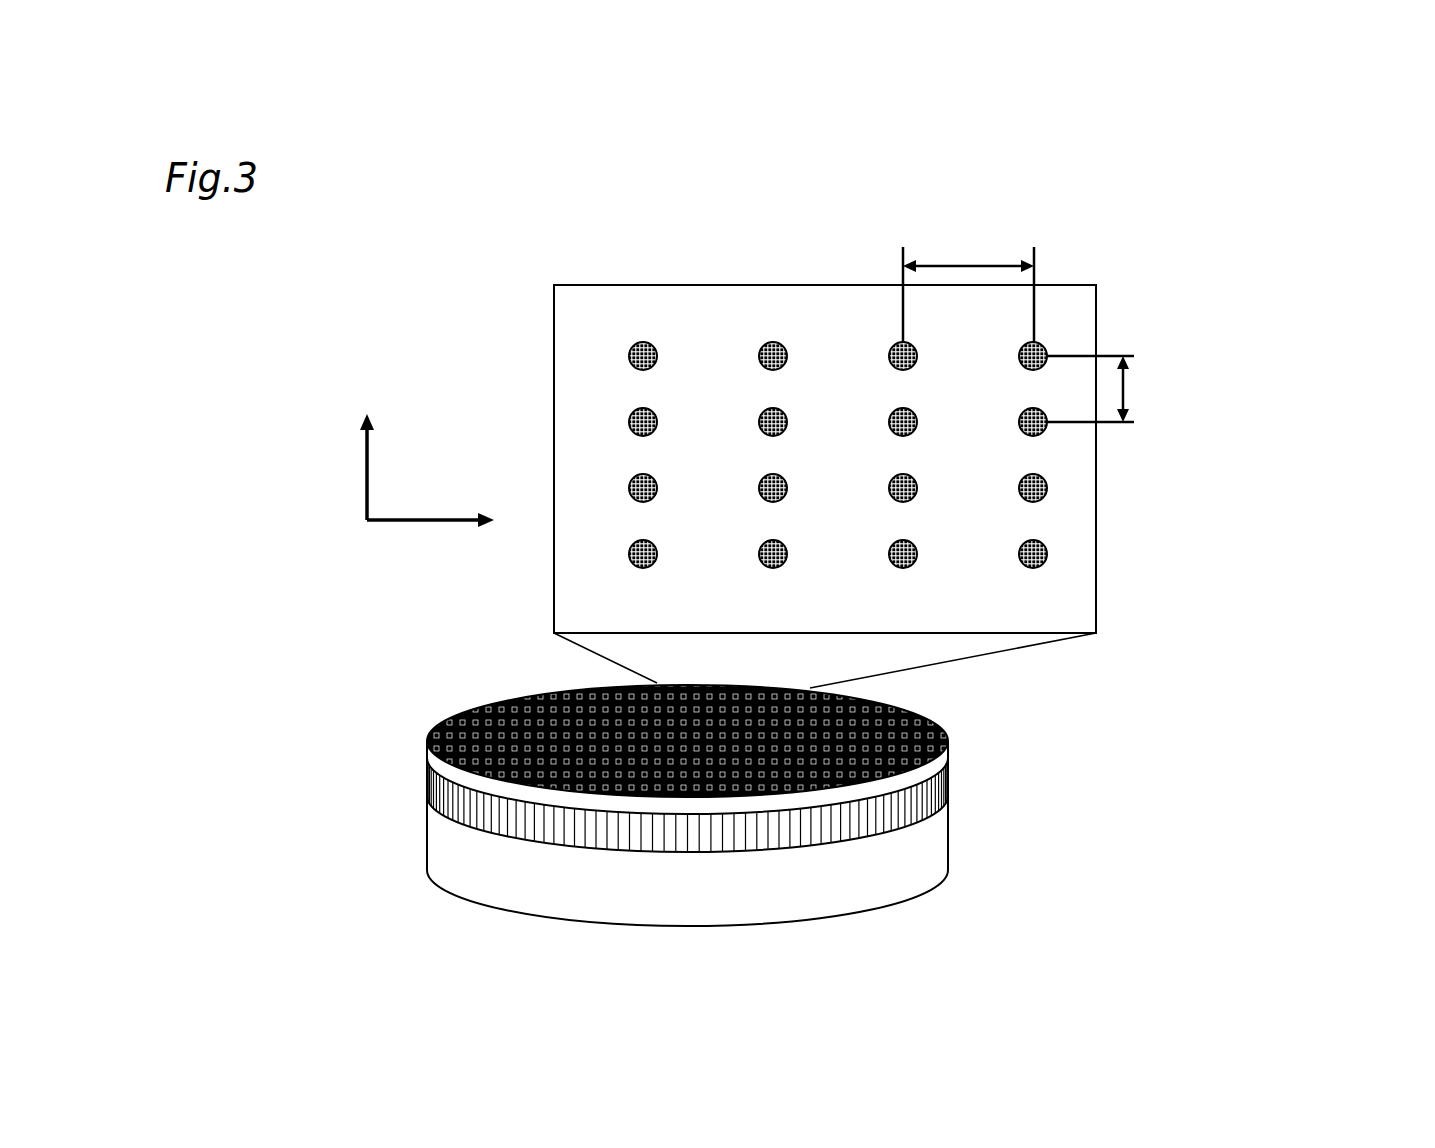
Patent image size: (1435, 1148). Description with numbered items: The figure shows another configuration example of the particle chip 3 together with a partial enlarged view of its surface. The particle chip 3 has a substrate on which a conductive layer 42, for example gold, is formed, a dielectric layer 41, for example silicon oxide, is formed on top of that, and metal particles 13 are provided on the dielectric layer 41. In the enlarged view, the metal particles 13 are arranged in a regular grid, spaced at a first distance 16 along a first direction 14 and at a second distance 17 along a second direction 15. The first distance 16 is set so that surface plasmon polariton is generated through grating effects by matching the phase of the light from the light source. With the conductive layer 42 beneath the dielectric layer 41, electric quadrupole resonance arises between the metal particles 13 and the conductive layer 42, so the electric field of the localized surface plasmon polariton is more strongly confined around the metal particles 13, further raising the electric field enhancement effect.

The particle chip 3 is at (736, 805).
The metal particles 13 is at (629, 355).
The first direction 14 is at (416, 543).
The second direction 15 is at (244, 467).
The first distance 16 is at (977, 262).
The second distance 17 is at (1127, 393).
The dielectric layer 41 is at (943, 753).
The conductive layer 42 is at (945, 783).